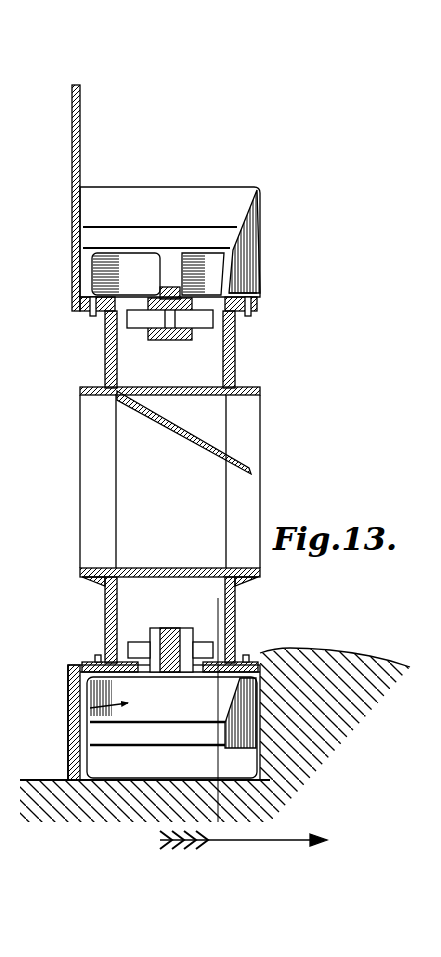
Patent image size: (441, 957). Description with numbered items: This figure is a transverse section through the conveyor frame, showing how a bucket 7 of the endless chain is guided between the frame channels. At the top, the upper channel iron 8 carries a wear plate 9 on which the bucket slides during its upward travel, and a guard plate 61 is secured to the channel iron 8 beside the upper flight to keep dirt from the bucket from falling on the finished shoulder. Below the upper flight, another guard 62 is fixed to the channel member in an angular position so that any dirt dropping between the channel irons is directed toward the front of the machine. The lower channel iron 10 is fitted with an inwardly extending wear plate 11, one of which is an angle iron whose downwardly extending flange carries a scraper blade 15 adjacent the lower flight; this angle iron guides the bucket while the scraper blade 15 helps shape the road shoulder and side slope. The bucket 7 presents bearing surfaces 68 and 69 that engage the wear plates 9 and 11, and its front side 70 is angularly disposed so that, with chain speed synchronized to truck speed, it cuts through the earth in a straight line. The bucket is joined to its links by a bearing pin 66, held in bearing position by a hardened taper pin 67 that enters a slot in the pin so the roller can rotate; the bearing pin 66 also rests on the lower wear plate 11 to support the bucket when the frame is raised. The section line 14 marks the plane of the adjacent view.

The guard plate 61 is at (72, 132).
The bucket 7 is at (188, 185).
The front side of bucket 70 is at (250, 253).
The bearing surface 69 is at (248, 292).
The bearing surface 68 is at (87, 292).
The wear plate 9 is at (258, 299).
The upper channel iron 8 is at (105, 346).
The taper pin 67 is at (168, 340).
The bearing pin 66 is at (138, 330).
The guard 62 is at (196, 446).
The lower channel iron 10 is at (225, 586).
The wear plate 11 is at (233, 656).
The scraper blade 15 is at (68, 699).
The section line 14 is at (216, 601).